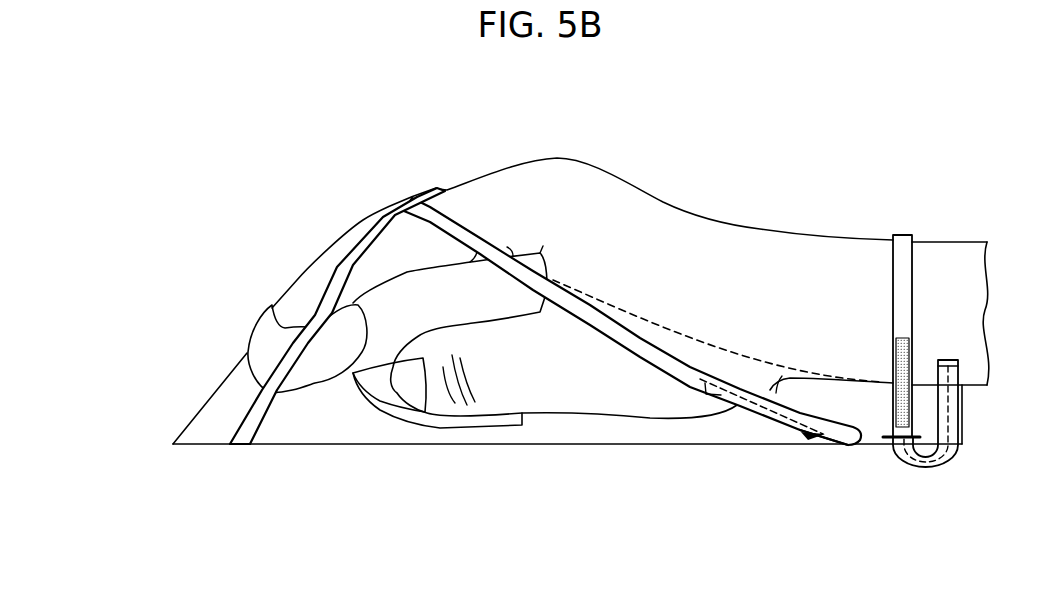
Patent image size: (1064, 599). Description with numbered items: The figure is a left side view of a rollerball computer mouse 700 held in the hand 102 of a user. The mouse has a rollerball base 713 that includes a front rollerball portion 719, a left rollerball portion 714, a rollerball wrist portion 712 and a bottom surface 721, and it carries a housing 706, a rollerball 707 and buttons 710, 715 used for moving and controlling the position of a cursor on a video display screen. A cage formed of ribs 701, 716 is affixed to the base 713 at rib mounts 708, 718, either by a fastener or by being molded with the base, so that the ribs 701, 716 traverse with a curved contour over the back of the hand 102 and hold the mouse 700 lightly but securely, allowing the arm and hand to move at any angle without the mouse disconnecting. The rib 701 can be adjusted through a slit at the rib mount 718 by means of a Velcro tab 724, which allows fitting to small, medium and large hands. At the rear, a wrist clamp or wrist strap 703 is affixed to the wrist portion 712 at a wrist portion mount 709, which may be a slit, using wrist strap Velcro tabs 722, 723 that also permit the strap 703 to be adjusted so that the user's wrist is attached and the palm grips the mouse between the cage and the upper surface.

The rollerball computer mouse 700 is at (210, 143).
The hand 102 is at (693, 223).
The rib 701 is at (600, 317).
The wrist clamp or wrist strap 703 is at (902, 270).
The housing 706 is at (290, 428).
The rollerball 707 is at (266, 335).
The rib mount 708 is at (238, 447).
The wrist portion mount 709 is at (900, 442).
The button 710 is at (377, 385).
The rollerball wrist portion 712 is at (863, 406).
The rollerball base 713 is at (542, 430).
The left rollerball portion 714 is at (603, 425).
The button 715 is at (396, 409).
The rib 716 is at (367, 235).
The rib mount 718 is at (808, 442).
The front rollerball portion 719 is at (172, 445).
The bottom surface 721 is at (468, 445).
The wrist strap Velcro tab 722 is at (963, 418).
The wrist strap Velcro tab 723 is at (903, 353).
The Velcro tab 724 is at (745, 405).